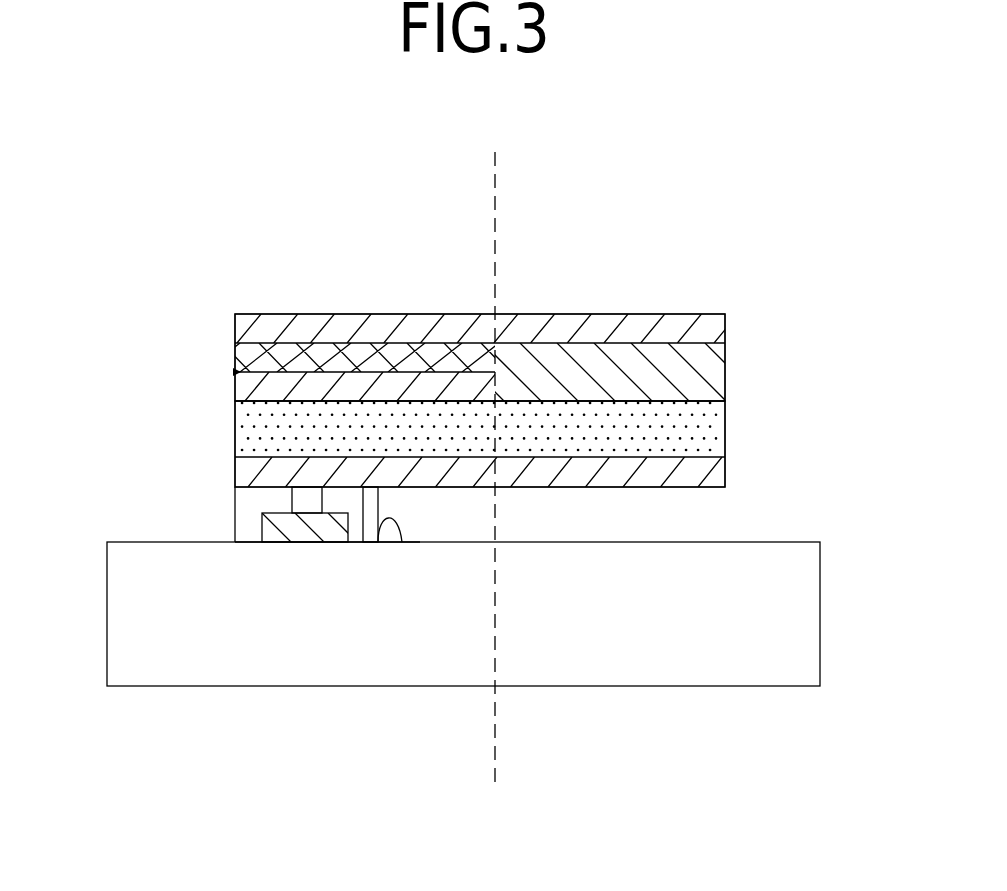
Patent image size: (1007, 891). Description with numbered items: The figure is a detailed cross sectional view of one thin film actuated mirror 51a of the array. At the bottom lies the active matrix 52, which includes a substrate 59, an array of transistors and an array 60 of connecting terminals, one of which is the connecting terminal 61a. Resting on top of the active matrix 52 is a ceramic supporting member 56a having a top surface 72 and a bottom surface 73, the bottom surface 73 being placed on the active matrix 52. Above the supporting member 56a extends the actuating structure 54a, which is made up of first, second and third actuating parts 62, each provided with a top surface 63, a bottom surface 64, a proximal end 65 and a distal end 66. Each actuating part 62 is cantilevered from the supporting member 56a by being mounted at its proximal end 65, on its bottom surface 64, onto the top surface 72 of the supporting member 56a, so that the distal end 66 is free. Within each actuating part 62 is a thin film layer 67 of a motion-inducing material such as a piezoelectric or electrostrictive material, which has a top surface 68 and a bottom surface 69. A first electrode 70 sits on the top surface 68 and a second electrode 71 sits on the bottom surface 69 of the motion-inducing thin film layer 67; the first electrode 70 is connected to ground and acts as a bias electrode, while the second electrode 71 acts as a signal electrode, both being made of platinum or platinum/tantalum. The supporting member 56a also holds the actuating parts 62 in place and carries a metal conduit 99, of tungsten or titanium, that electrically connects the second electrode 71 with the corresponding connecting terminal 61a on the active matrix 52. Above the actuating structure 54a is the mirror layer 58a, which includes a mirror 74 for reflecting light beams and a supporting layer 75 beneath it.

The thin film actuated mirror 51a is at (662, 175).
The active matrix 52 is at (93, 510).
The actuating structure 54a is at (167, 377).
The supporting member 56a is at (245, 515).
The mirror layer 58a is at (775, 318).
The substrate 59 is at (370, 660).
The array of connecting terminals 60 is at (158, 517).
The connecting terminal 61a is at (303, 542).
The actuating parts 62 is at (412, 473).
The top surface 63 is at (283, 370).
The bottom surface 64 is at (405, 488).
The proximal end 65 is at (257, 412).
The distal end 66 is at (498, 401).
The motion-inducing thin film layer 67 is at (362, 422).
The top surface 68 is at (318, 400).
The bottom surface 69 is at (362, 488).
The first electrode 70 is at (365, 390).
The second electrode 71 is at (417, 428).
The top surface 72 is at (247, 493).
The bottom surface 73 is at (402, 542).
The mirror 74 is at (705, 335).
The supporting layer 75 is at (713, 372).
The conduit 99 is at (292, 503).